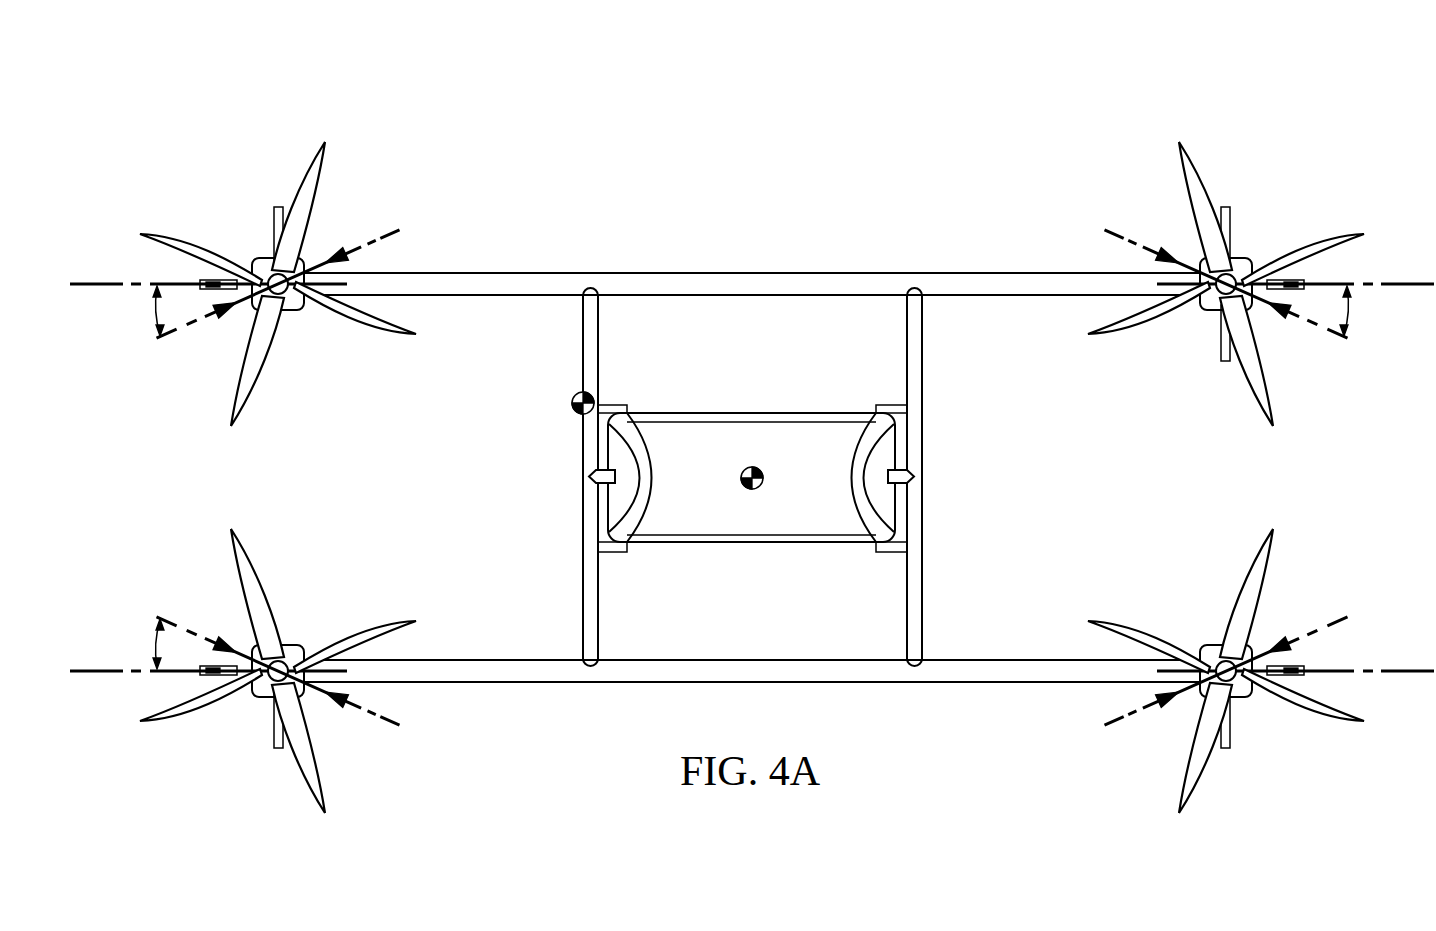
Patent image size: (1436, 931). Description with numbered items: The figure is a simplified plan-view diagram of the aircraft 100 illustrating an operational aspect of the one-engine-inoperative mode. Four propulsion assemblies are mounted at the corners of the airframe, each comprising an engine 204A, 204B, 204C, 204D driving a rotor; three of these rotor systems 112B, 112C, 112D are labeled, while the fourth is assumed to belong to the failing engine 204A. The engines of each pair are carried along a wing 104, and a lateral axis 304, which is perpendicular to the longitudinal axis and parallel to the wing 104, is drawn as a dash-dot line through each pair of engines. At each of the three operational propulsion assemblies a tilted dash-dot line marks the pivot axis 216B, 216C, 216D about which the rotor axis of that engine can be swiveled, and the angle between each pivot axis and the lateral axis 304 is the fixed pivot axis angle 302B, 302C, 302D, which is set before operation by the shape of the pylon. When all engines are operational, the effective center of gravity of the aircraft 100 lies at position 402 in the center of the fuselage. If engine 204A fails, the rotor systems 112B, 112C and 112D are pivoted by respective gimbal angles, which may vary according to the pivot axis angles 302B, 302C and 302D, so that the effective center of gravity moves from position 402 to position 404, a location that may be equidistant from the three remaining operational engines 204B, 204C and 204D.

The aircraft 100 is at (492, 121).
The wing 104 is at (804, 272).
The rotor system 112B is at (1154, 334).
The rotor system 112C is at (350, 334).
The rotor system 112D is at (350, 621).
The engine 204A is at (1242, 698).
The engine 204B is at (1242, 257).
The engine 204C is at (262, 257).
The engine 204D is at (262, 698).
The pivot axis 216B is at (1129, 208).
The pivot axis 216C is at (393, 229).
The pivot axis 216D is at (393, 726).
The pivot axis angle 302B is at (1349, 313).
The pivot axis angle 302C is at (155, 313).
The pivot axis angle 302D is at (155, 642).
The lateral axis 304 is at (98, 281).
The effective CG position 402 is at (764, 471).
The effective CG position 404 is at (576, 394).